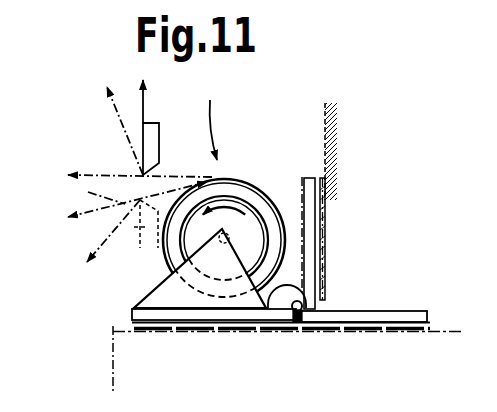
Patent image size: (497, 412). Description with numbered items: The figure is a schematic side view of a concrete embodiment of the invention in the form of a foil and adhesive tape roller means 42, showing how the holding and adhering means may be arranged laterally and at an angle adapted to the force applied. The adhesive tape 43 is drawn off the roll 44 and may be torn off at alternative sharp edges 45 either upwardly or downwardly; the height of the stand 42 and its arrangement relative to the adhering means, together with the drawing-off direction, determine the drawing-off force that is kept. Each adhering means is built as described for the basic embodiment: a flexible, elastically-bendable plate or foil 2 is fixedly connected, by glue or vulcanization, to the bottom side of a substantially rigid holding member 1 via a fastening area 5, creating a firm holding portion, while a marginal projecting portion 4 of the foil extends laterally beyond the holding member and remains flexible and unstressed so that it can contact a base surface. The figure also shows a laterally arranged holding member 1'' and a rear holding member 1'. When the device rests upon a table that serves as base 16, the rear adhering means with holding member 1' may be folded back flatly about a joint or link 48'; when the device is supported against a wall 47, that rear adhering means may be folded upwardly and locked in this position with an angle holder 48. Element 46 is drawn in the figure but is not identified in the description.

The holding member 1 is at (173, 300).
The holding member 1' is at (363, 286).
The holding member 1'' is at (296, 204).
The plate or foil 2 is at (326, 242).
The marginal projecting portion 4 is at (132, 325).
The fastening area 5 is at (326, 218).
The base 16 is at (450, 328).
The adhesive tape roller means 42 is at (215, 117).
The adhesive tape 43 is at (90, 193).
The roll 44 is at (268, 203).
The sharp edges 45 is at (153, 138).
The holder 46 is at (167, 293).
The wall 47 is at (337, 124).
The angle holder 48 is at (224, 240).
The joint or link 48' is at (325, 288).